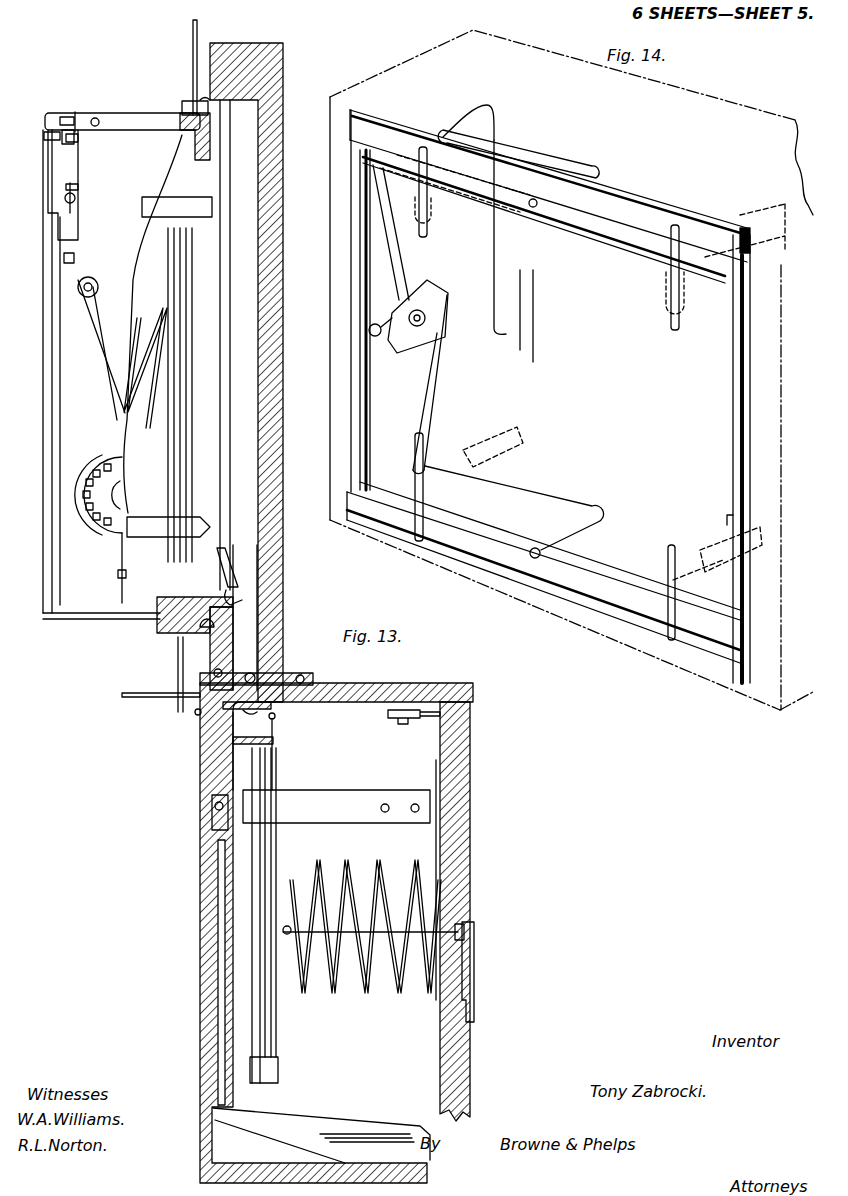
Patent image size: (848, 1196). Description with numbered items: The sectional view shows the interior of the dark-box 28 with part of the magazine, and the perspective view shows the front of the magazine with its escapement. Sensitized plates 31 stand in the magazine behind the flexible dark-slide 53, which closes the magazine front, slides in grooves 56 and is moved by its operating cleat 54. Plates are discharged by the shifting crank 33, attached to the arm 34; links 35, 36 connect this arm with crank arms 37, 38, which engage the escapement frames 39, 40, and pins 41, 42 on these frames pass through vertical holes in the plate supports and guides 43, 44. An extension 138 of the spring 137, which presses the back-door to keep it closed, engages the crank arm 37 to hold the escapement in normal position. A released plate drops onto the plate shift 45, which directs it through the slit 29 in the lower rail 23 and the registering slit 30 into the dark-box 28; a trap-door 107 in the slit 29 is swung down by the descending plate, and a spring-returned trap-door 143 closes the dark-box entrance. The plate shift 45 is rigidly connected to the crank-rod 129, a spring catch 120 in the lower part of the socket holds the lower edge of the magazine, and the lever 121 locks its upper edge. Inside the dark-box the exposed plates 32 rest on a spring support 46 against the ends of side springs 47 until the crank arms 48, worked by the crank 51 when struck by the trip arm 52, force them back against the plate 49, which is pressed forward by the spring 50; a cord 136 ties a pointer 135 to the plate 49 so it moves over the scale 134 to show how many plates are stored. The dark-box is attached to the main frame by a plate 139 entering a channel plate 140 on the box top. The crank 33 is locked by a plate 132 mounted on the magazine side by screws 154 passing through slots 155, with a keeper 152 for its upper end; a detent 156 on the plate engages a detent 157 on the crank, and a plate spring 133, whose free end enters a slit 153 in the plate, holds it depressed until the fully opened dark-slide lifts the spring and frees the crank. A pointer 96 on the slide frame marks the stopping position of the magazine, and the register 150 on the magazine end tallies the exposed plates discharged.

In FIG. 13, the pointer 96 is at (192, 30).
In FIG. 13, the lever 121 is at (200, 106).
In FIG. 13, the keeper 152 is at (48, 116).
In FIG. 13, the screws 154 is at (80, 115).
In FIG. 13, the slots 155 is at (79, 139).
In FIG. 13, the plate spring 133 is at (47, 140).
In FIG. 13, the slit 153 is at (68, 144).
In FIG. 13, the plate 132 is at (79, 172).
In FIG. 13, the detent 156 is at (218, 154).
In FIG. 13, the sensitized plates 31 is at (176, 258).
In FIG. 13, the detent 157 is at (64, 258).
In FIG. 13, the crank 33 is at (100, 345).
In FIG. 13, the flexible dark-slide 53 is at (53, 394).
In FIG. 13, the operating cleat 54 is at (47, 428).
In FIG. 13, the indicator 150 is at (118, 539).
In FIG. 13, the grooves 56 is at (212, 590).
In FIG. 13, the plate shift 45 is at (240, 578).
In FIG. 13, the crank-rod 129 is at (240, 598).
In FIG. 13, the slit 29 is at (247, 650).
In FIG. 13, the trap-door 107 is at (255, 673).
In FIG. 13, the spring catch 120 is at (200, 623).
In FIG. 13, the plate 139 is at (280, 675).
In FIG. 13, the trip arm 52 is at (178, 665).
In FIG. 13, the lower rail 23 is at (213, 660).
In FIG. 13, the channel plate 140 is at (306, 681).
In FIG. 13, the crank 51 is at (122, 698).
In FIG. 13, the slit 30 is at (212, 692).
In FIG. 13, the trap-door 143 is at (240, 713).
In FIG. 13, the crank arms 48 is at (212, 798).
In FIG. 13, the side springs 47 is at (310, 790).
In FIG. 13, the spring 50 is at (358, 856).
In FIG. 13, the dark-box 28 is at (201, 893).
In FIG. 13, the cord 136 is at (382, 942).
In FIG. 13, the pointer 135 is at (474, 1000).
In FIG. 13, the plate 49 is at (278, 1021).
In FIG. 13, the exposed plates 32 is at (276, 1054).
In FIG. 13, the scale 134 is at (468, 1080).
In FIG. 13, the spring support 46 is at (244, 1127).
In FIG. 14, the extension 138 is at (467, 123).
In FIG. 14, the crank arm 37 is at (573, 170).
In FIG. 14, the escapement frame 40 is at (710, 222).
In FIG. 14, the plate supports and guides 43 is at (452, 209).
In FIG. 14, the pins 42 is at (428, 234).
In FIG. 14, the link 35 is at (389, 263).
In FIG. 14, the arm 34 is at (435, 288).
In FIG. 14, the spring 137 is at (500, 260).
In FIG. 14, the escapement frame 39 is at (757, 272).
In FIG. 14, the link 36 is at (437, 384).
In FIG. 14, the plate supports and guides 44 is at (490, 446).
In FIG. 14, the pins 41 is at (415, 451).
In FIG. 14, the crank arm 38 is at (563, 498).